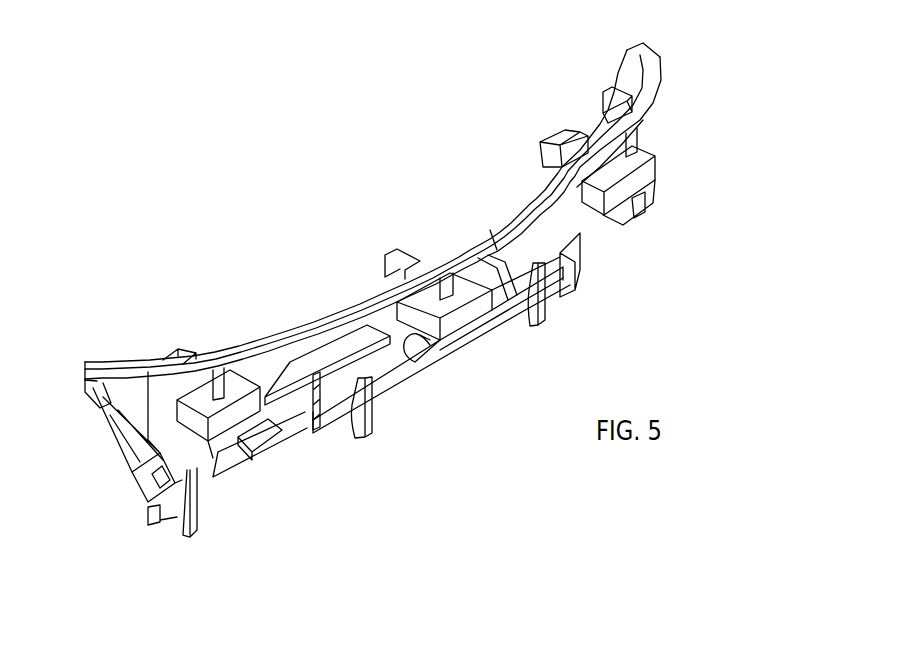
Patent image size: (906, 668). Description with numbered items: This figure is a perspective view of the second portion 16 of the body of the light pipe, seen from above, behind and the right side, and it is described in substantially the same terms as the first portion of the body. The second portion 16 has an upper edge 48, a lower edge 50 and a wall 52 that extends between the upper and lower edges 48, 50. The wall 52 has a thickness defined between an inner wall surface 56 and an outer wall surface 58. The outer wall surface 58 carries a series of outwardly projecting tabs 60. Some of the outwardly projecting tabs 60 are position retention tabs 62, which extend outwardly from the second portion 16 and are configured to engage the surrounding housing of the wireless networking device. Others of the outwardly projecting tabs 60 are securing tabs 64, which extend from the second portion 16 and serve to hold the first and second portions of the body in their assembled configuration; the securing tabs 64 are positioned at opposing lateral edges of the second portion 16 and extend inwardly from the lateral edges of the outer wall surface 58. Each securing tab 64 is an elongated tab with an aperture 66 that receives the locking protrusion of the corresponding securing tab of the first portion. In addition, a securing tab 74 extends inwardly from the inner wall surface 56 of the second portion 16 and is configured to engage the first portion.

The second portion 16 is at (340, 202).
The upper edge 48 is at (663, 63).
The lower edge 50 is at (496, 322).
The wall 52 is at (565, 255).
The inner wall surface 56 is at (630, 62).
The outer wall surface 58 is at (282, 365).
The outwardly projecting tabs 60 is at (489, 363).
The position retention tabs 62 is at (555, 200).
The securing tabs 64 is at (669, 172).
The aperture 66 is at (132, 460).
The securing tab 74 is at (213, 364).